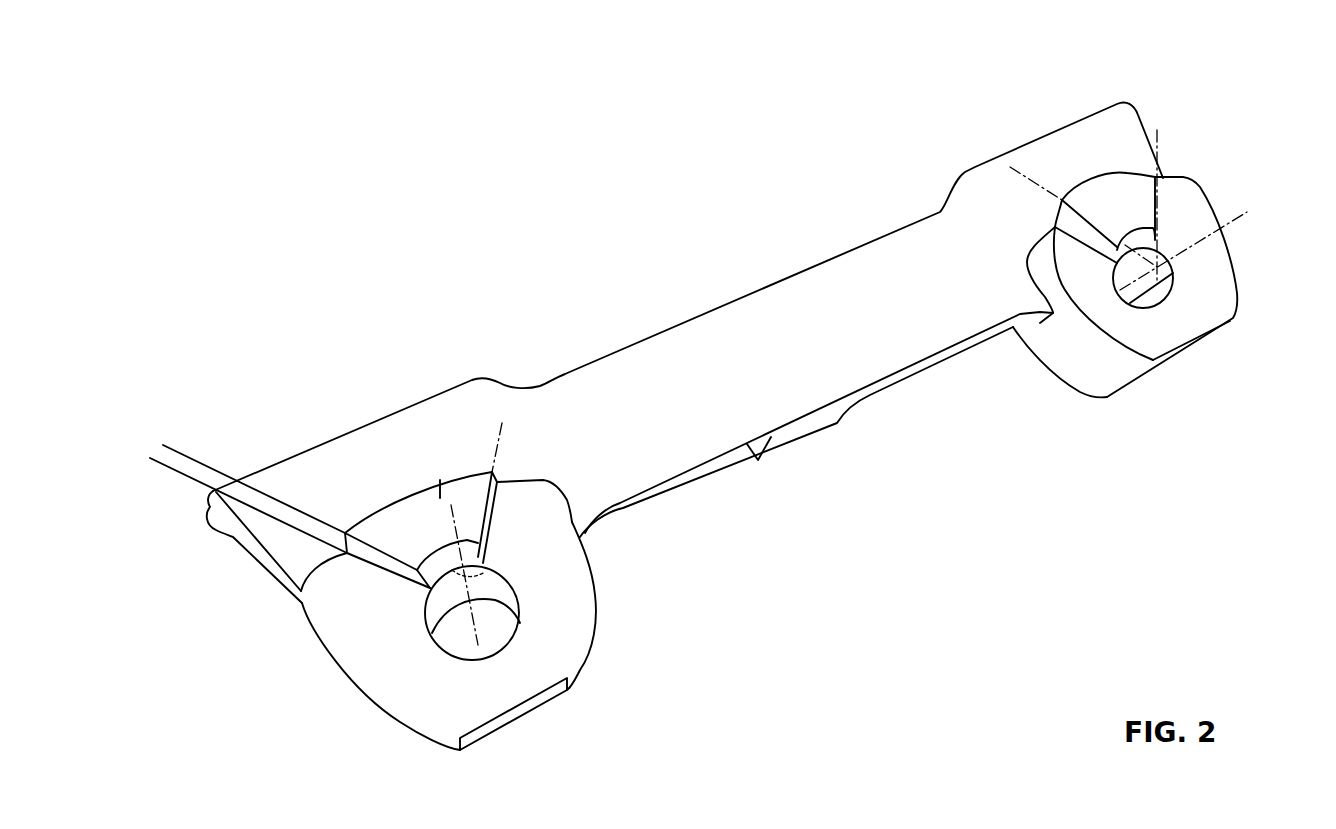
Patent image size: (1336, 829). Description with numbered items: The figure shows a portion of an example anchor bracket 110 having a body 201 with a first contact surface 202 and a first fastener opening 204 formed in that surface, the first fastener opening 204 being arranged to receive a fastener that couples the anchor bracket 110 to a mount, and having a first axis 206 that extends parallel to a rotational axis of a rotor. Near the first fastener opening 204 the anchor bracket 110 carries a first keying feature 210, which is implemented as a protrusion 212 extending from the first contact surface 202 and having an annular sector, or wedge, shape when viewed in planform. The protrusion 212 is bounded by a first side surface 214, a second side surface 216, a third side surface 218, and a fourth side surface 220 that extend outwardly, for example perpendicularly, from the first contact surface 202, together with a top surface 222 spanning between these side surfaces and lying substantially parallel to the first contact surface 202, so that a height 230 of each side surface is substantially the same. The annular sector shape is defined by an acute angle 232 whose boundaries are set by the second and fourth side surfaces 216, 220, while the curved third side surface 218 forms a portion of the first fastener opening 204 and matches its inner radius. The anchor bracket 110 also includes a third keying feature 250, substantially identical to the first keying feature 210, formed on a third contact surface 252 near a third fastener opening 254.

The anchor bracket 110 is at (783, 278).
The body 201 is at (710, 333).
The first contact surface 202 is at (570, 593).
The first fastener opening 204 is at (492, 634).
The first axis 206 is at (476, 626).
The first keying feature 210 is at (325, 598).
The protrusion 212 is at (493, 473).
The first side surface 214 is at (420, 472).
The second side surface 216 is at (430, 588).
The third side surface 218 is at (467, 557).
The fourth side surface 220 is at (496, 500).
The top surface 222 is at (440, 480).
The height 230 is at (155, 487).
The angle 232 is at (453, 553).
The third keying feature 250 is at (1246, 277).
The third contact surface 252 is at (1193, 310).
The third fastener opening 254 is at (1122, 271).